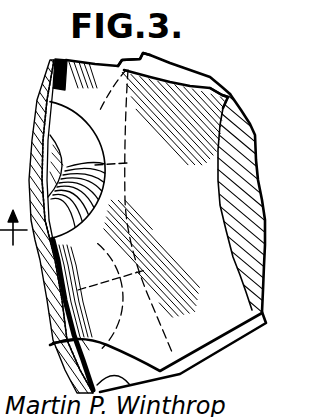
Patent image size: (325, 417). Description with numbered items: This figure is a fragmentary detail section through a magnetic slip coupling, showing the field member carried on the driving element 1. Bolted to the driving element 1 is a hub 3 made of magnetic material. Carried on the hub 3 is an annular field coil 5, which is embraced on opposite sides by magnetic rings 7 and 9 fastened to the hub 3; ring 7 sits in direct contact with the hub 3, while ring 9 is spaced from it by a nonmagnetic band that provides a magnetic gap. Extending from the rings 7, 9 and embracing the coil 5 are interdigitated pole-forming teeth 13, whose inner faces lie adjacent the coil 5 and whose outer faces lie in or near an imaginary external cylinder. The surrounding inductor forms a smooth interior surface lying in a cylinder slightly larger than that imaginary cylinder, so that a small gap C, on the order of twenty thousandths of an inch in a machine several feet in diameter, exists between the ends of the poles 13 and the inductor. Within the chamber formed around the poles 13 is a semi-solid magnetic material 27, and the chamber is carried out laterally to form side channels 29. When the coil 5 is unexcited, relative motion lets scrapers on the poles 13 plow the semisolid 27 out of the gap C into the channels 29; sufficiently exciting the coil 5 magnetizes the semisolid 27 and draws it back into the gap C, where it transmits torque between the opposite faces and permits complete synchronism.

The driving element 1 is at (13, 236).
The hub 3 is at (250, 157).
The annular field coil 5 is at (188, 76).
The magnetic ring 7 is at (202, 108).
The magnetic ring 9 is at (133, 60).
The pole-forming teeth 13 is at (62, 60).
The semi-solid magnetic material 27 is at (47, 236).
The side channels 29 is at (44, 93).
The gap C is at (60, 340).